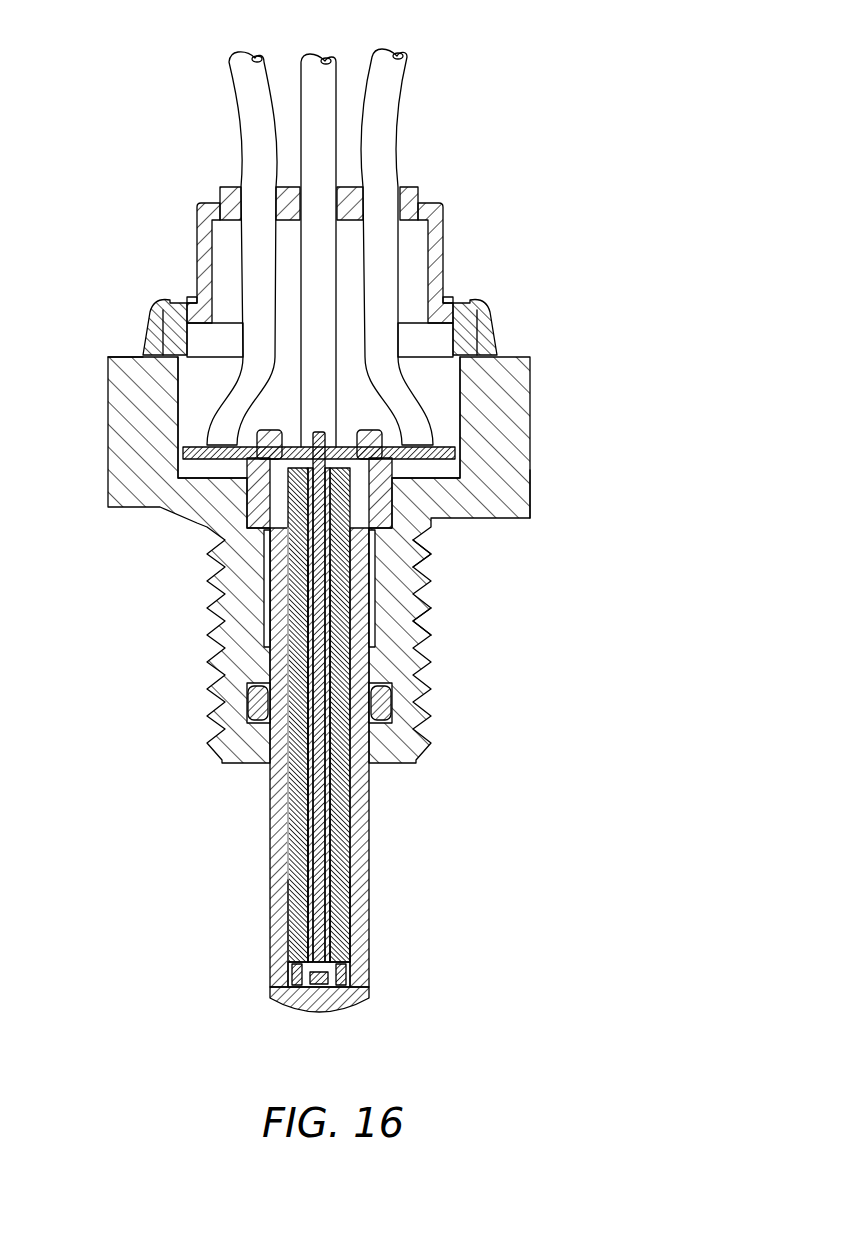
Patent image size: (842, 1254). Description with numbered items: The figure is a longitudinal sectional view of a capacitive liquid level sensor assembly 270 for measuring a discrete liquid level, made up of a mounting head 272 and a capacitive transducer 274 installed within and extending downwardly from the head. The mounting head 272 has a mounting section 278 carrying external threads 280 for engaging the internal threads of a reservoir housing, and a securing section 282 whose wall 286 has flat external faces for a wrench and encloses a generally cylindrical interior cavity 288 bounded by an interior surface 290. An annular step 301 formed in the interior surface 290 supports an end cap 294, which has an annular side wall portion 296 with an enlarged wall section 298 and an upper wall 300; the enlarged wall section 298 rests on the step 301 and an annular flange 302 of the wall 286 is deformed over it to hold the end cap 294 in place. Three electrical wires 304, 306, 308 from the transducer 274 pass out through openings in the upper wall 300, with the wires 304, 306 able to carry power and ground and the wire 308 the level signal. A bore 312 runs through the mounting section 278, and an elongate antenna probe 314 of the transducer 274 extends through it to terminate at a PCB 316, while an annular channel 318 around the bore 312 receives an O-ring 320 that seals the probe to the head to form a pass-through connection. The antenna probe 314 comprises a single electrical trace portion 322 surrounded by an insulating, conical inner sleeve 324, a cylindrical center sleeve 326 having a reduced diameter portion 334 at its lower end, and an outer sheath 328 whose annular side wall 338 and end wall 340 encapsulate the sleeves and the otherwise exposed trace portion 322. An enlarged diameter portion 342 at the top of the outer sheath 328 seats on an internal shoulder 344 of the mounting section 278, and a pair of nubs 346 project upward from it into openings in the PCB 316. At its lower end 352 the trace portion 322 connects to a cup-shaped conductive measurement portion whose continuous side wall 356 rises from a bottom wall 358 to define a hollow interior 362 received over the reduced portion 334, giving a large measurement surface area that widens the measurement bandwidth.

The capacitive liquid level sensor assembly 270 is at (607, 222).
The mounting head 272 is at (343, 557).
The capacitive transducer 274 is at (318, 751).
The mounting section 278 is at (426, 563).
The external threads 280 is at (431, 626).
The securing section 282 is at (530, 472).
The wall 286 is at (513, 383).
The interior cavity 288 is at (417, 318).
The interior surface 290 is at (441, 342).
The end cap 294 is at (276, 247).
The annular side wall portion 296 is at (205, 249).
The enlarged wall section 298 is at (148, 318).
The upper wall 300 is at (229, 186).
The annular step 301 is at (145, 357).
The annular flange 302 is at (190, 297).
The electrical wire 304 is at (243, 82).
The electrical wire 306 is at (314, 72).
The electrical wire 308 is at (400, 70).
The bore 312 is at (213, 597).
The antenna probe 314 is at (367, 845).
The PCB 316 is at (183, 452).
The annular channel 318 is at (248, 692).
The seal ring 320 is at (424, 692).
The electrical trace portion 322 is at (270, 840).
The inner sleeve 324 is at (270, 783).
The center sleeve 326 is at (270, 808).
The outer sheath 328 is at (270, 887).
The reduced diameter portion 334 is at (367, 911).
The annular side wall 338 is at (367, 886).
The end wall 340 is at (347, 1011).
The enlarged diameter portion 342 is at (258, 500).
The internal shoulder 344 is at (207, 543).
The nubs 346 is at (272, 430).
The lower end 352 is at (272, 977).
The continuous side wall 356 is at (272, 933).
The bottom wall 358 is at (303, 1010).
The hollow interior 362 is at (367, 960).